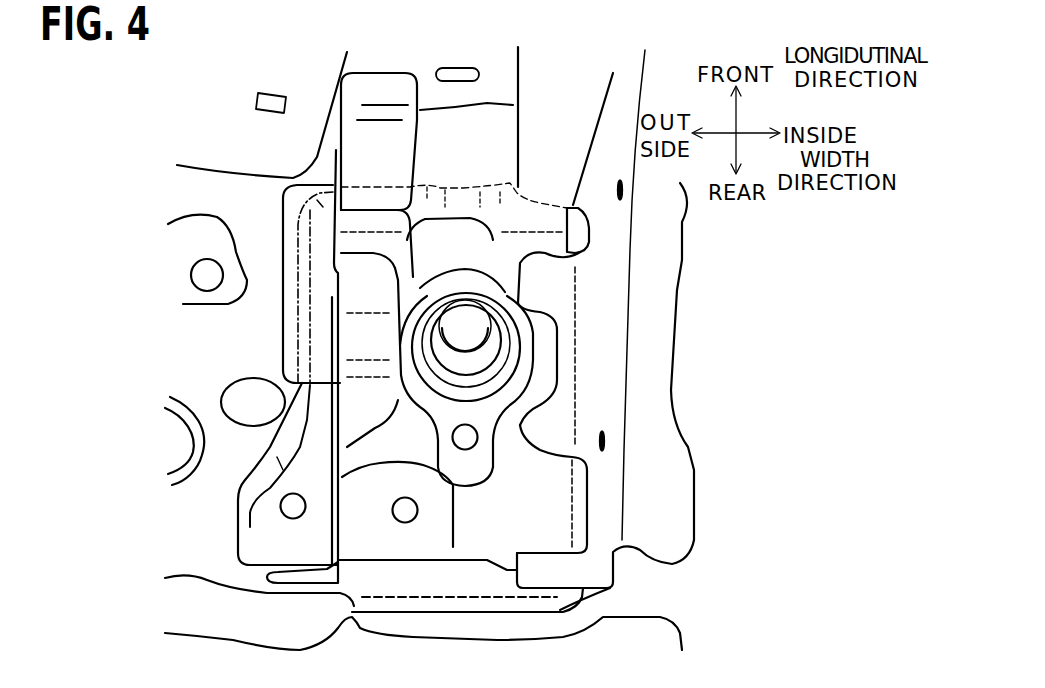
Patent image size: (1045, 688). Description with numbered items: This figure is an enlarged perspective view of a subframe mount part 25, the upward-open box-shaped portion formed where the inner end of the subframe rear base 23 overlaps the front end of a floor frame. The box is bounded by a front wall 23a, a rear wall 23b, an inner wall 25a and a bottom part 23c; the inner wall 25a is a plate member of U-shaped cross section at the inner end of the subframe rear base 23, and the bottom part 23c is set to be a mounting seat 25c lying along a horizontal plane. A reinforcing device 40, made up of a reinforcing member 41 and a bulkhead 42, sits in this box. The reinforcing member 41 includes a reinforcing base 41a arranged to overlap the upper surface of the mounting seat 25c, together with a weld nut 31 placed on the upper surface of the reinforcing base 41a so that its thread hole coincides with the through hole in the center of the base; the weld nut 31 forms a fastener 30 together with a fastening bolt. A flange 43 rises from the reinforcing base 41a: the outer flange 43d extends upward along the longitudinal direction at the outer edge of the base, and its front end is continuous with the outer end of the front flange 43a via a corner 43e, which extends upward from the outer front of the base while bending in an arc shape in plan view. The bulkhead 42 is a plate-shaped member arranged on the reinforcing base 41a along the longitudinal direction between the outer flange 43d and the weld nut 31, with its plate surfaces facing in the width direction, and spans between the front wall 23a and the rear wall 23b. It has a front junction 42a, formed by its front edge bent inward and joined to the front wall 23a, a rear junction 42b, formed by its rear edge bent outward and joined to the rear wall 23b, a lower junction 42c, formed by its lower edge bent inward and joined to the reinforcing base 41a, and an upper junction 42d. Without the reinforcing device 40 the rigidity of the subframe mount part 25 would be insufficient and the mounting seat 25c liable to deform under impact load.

The subframe rear base 23 is at (516, 113).
The front wall 23a is at (457, 92).
The rear wall 23b is at (395, 582).
The bottom part 23c is at (194, 394).
The subframe mount part 25 is at (227, 120).
The inner wall 25a is at (598, 358).
The mounting seat 25c is at (233, 449).
The fastener 30 is at (658, 437).
The weld nut 31 is at (500, 337).
The reinforcing device 40 is at (415, 130).
The reinforcing member 41 is at (599, 390).
The reinforcing base 41a is at (520, 423).
The bulkhead 42 is at (333, 187).
The front junction 42a is at (378, 92).
The rear junction 42b is at (300, 574).
The lower junction 42c is at (357, 339).
The upper junction 42d is at (307, 233).
The flange 43 is at (627, 281).
The front flange 43a is at (490, 196).
The outer flange 43d is at (278, 455).
The corner 43e is at (327, 177).